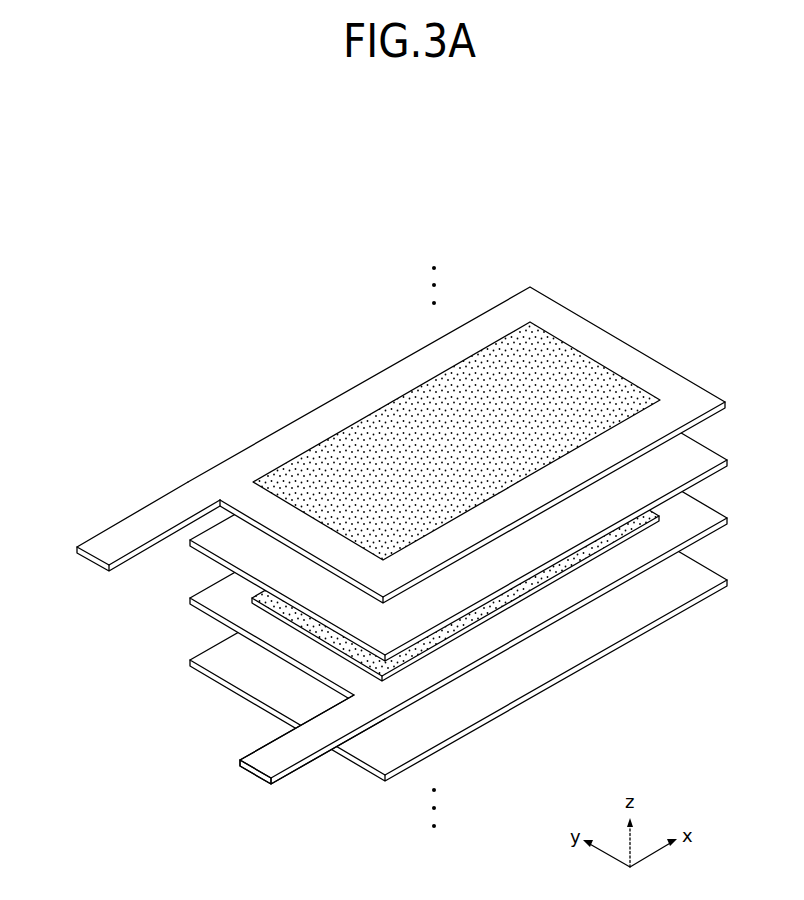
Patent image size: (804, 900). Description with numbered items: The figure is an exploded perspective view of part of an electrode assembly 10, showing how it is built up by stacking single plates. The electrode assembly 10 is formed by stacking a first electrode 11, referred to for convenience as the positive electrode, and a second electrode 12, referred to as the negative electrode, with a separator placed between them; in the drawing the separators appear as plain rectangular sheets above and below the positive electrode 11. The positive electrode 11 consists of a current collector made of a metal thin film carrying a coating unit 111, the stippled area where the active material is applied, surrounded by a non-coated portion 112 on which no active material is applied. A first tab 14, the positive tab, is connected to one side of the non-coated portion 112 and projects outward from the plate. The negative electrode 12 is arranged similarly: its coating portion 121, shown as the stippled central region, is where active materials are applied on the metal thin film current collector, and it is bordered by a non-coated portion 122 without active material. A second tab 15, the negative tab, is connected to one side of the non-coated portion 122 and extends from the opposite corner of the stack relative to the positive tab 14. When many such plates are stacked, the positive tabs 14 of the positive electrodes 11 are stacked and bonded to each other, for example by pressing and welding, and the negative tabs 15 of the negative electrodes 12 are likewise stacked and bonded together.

The electrode assembly 10 is at (402, 510).
The first electrode 11 is at (458, 609).
The coating unit 111 is at (458, 593).
The non-coated portion 112 is at (455, 578).
The second electrode 12 is at (401, 398).
The coating portion 121 is at (456, 396).
The non-coated portion 122 is at (401, 418).
The first tab 14 is at (312, 755).
The second tab 15 is at (148, 519).